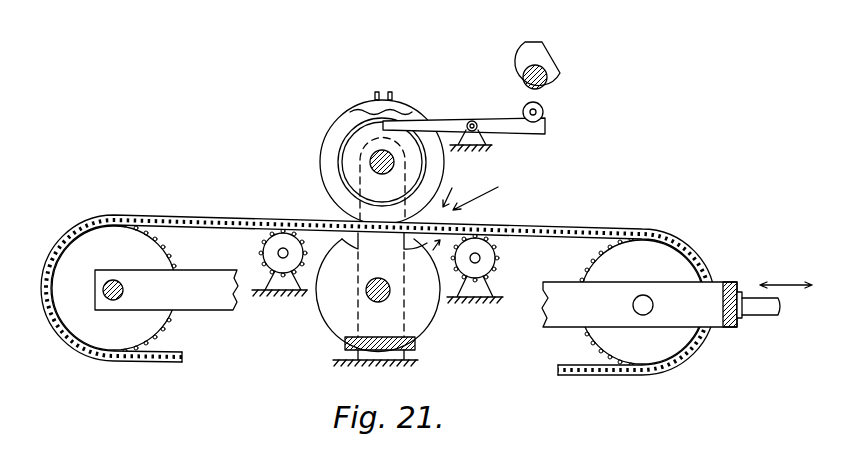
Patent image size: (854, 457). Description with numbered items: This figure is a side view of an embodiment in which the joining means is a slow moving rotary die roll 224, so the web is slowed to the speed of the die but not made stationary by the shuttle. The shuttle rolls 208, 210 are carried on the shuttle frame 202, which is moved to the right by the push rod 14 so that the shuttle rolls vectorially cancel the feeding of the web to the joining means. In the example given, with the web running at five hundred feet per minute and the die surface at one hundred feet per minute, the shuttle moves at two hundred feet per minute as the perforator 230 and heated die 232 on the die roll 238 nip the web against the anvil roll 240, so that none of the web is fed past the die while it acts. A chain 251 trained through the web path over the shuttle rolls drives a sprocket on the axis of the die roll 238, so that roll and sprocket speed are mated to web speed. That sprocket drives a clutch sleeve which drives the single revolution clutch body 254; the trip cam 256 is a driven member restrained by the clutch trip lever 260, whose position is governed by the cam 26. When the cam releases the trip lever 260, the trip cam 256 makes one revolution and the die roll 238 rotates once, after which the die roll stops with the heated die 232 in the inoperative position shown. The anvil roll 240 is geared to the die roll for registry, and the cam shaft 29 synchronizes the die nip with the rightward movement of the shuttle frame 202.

The cam 26 is at (545, 60).
The cam shaft 29 is at (547, 80).
The heated die 232 is at (377, 92).
The perforator 230 is at (390, 93).
The trip lever 260 is at (450, 126).
The trip cam 256 is at (357, 138).
The clutch body 254 is at (339, 148).
The die roll 238 is at (322, 172).
The rotary die roll 224 is at (491, 196).
The chain 251 is at (586, 231).
The shuttle roll 210 is at (82, 323).
The anvil roll 240 is at (330, 322).
The shuttle frame 202 is at (571, 306).
The shuttle roll 208 is at (670, 348).
The push rod 14 is at (770, 308).